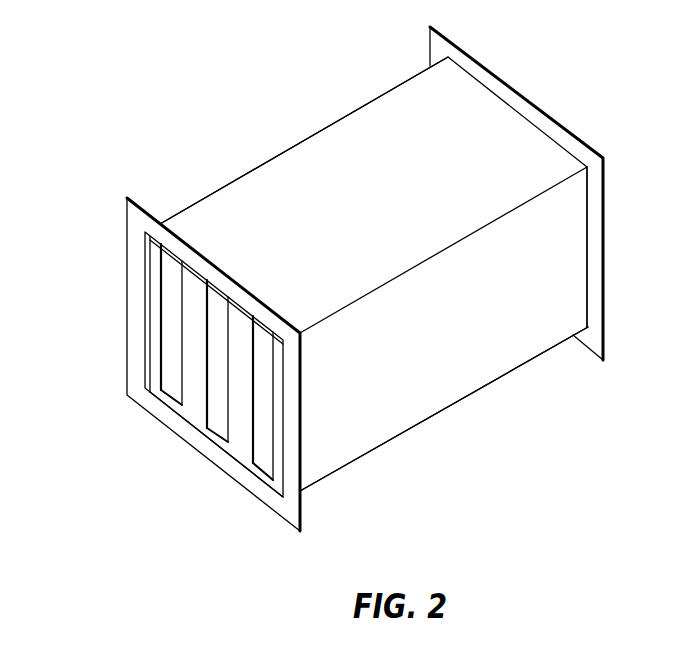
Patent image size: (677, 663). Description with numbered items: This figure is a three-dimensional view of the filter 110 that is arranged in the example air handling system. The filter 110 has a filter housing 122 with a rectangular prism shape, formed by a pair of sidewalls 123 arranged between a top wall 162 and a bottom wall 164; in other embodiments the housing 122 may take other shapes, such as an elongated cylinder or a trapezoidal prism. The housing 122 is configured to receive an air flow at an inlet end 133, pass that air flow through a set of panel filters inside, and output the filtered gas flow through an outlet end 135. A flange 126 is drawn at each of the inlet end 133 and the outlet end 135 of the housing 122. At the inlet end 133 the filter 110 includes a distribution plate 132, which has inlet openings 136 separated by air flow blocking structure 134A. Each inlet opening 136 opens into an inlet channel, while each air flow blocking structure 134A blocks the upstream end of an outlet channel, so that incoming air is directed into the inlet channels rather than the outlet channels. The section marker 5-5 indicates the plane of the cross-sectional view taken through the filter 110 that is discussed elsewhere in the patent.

The filter 110 is at (355, 279).
The filter housing 122 is at (275, 195).
The sidewalls 123 is at (433, 378).
The flange 126 is at (335, 279).
The distribution plate 132 is at (195, 328).
The inlet end 133 is at (118, 423).
The air flow blocking structure 134A is at (238, 337).
The outlet end 135 is at (573, 78).
The inlet openings 136 is at (263, 404).
The top wall 162 is at (340, 158).
The bottom wall 164 is at (482, 345).
The section line 5-5 is at (622, 288).